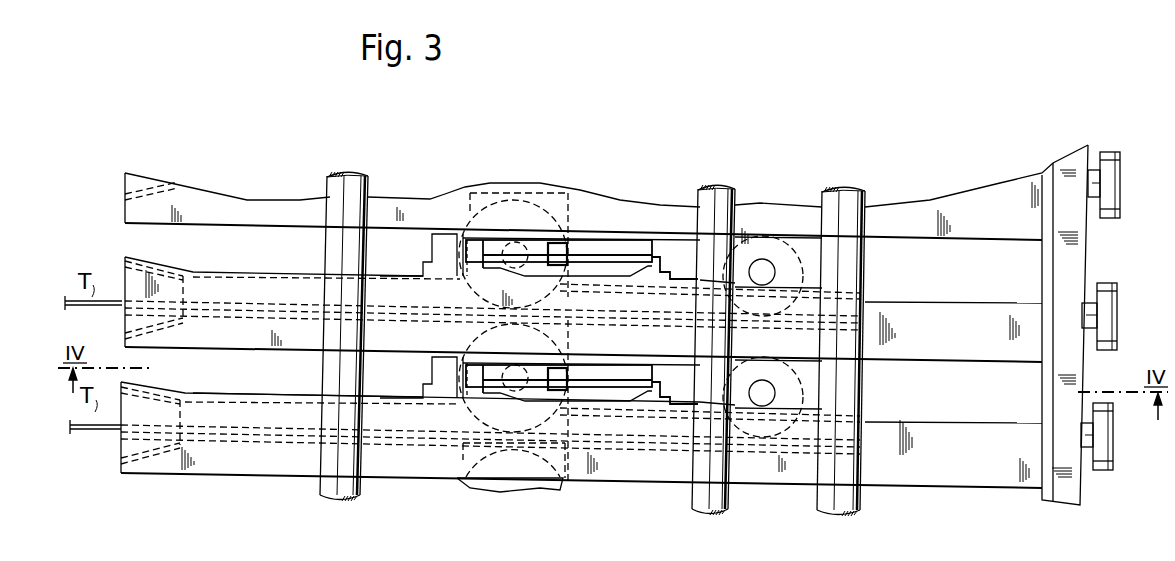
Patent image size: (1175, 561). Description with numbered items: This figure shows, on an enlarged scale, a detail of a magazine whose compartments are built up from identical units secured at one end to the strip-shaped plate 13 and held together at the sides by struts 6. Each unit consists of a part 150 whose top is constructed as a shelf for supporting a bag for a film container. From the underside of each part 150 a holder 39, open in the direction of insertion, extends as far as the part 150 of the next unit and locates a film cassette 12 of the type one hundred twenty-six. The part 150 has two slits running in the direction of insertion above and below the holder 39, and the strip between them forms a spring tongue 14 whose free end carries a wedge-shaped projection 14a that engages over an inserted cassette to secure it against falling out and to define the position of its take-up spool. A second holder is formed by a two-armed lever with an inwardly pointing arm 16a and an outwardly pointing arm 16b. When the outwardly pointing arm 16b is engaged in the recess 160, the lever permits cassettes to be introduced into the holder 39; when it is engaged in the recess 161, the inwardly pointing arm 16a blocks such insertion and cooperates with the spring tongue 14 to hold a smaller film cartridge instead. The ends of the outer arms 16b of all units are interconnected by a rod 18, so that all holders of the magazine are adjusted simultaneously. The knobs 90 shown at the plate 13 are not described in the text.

The strut 6 is at (333, 187).
The film cassette 12 is at (470, 342).
The strip-shaped plate 13 is at (1070, 165).
The spring tongue 14 is at (615, 447).
The wedge-shaped projection 14a is at (480, 190).
The inwardly pointing arm 16a is at (470, 380).
The outwardly pointing arm 16b is at (596, 252).
The rod 18 is at (722, 186).
The holder 39 is at (652, 412).
The adjusting knob 90 is at (1118, 205).
The part 150 is at (278, 440).
The recess 160 is at (676, 275).
The recess 161 is at (452, 265).